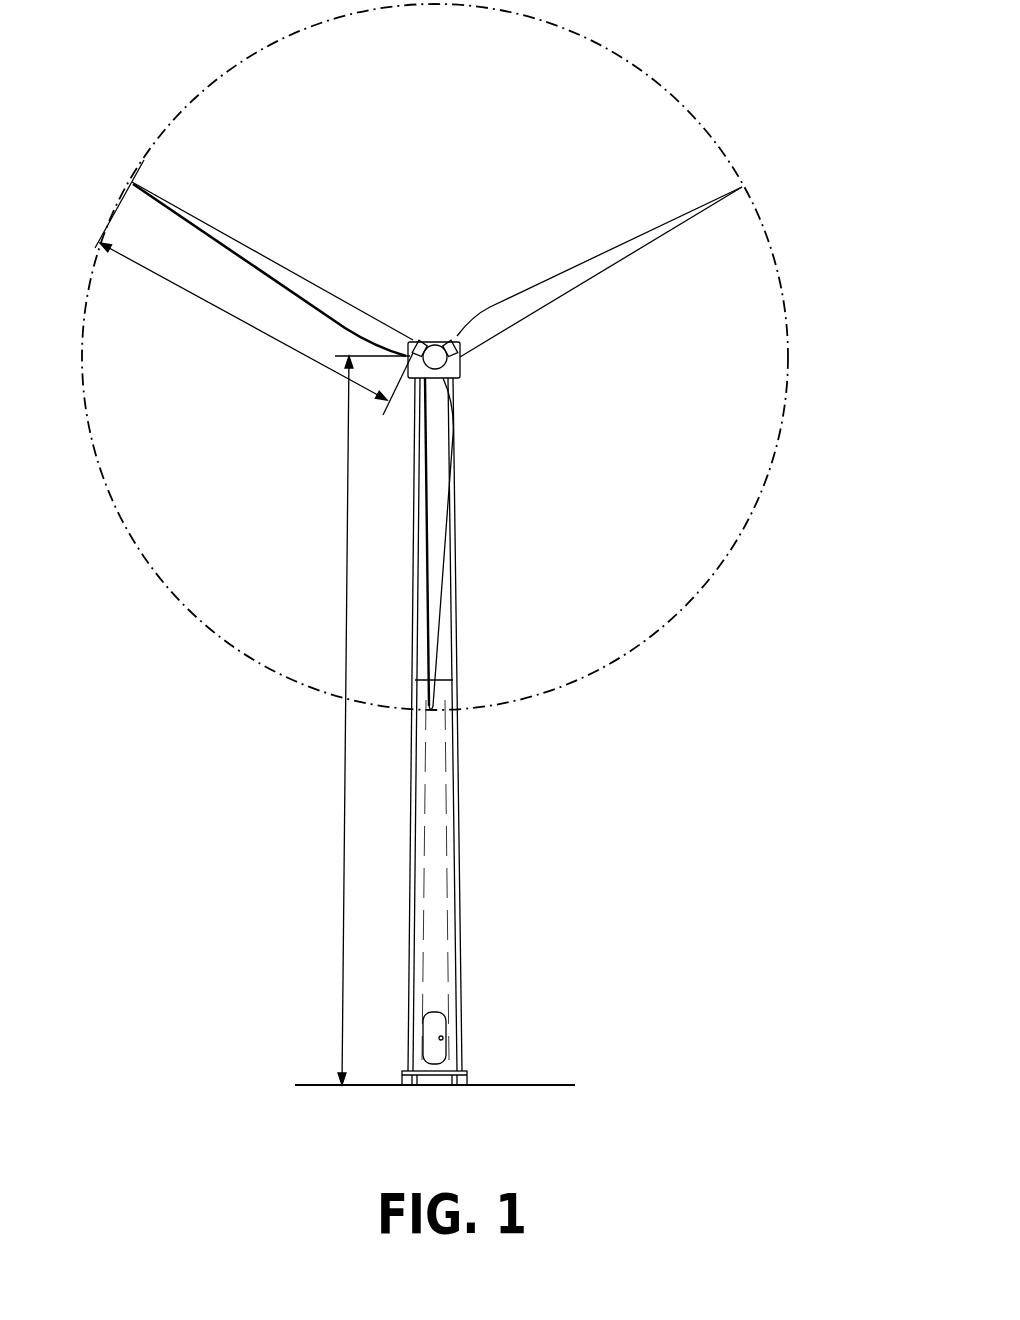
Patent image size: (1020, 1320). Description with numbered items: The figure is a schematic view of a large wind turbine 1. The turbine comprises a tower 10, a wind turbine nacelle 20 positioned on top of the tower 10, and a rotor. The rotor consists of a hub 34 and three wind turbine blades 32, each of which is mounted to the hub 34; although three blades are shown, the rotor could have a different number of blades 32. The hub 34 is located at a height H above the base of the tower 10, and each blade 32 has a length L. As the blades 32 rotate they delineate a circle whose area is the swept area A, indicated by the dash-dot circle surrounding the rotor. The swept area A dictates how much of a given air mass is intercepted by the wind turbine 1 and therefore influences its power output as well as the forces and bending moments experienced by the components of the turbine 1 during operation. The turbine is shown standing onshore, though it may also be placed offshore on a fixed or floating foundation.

The wind turbine 1 is at (438, 559).
The tower 10 is at (457, 827).
The wind turbine nacelle 20 is at (460, 367).
The wind turbine blades 32 is at (567, 293).
The hub 34 is at (432, 343).
The swept area A is at (600, 675).
The blade length L is at (254, 287).
The hub height H is at (363, 720).